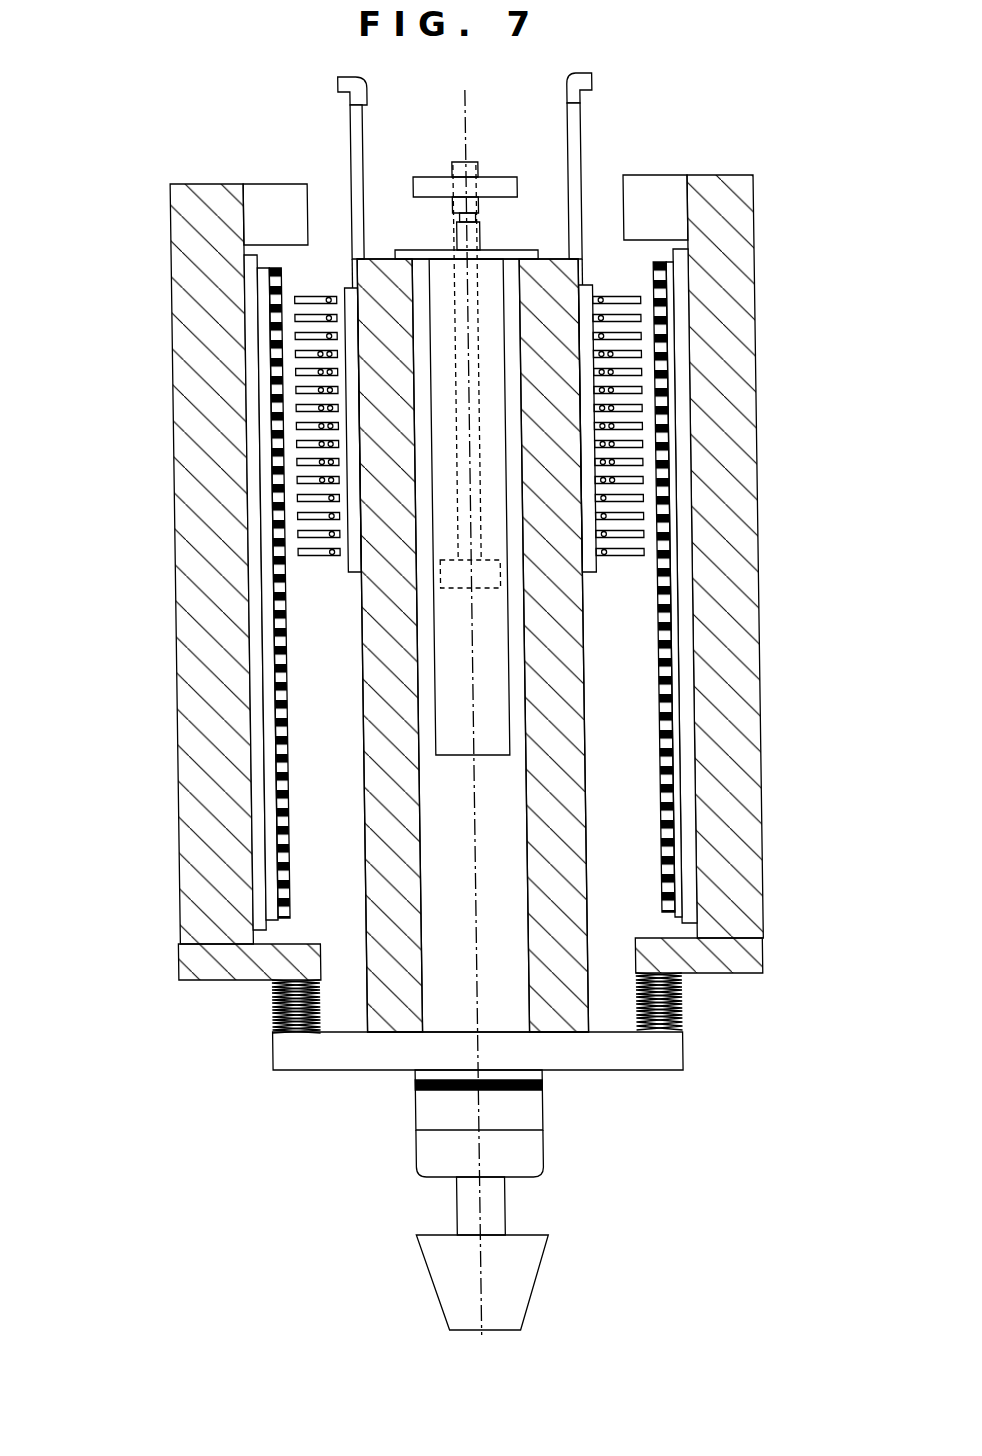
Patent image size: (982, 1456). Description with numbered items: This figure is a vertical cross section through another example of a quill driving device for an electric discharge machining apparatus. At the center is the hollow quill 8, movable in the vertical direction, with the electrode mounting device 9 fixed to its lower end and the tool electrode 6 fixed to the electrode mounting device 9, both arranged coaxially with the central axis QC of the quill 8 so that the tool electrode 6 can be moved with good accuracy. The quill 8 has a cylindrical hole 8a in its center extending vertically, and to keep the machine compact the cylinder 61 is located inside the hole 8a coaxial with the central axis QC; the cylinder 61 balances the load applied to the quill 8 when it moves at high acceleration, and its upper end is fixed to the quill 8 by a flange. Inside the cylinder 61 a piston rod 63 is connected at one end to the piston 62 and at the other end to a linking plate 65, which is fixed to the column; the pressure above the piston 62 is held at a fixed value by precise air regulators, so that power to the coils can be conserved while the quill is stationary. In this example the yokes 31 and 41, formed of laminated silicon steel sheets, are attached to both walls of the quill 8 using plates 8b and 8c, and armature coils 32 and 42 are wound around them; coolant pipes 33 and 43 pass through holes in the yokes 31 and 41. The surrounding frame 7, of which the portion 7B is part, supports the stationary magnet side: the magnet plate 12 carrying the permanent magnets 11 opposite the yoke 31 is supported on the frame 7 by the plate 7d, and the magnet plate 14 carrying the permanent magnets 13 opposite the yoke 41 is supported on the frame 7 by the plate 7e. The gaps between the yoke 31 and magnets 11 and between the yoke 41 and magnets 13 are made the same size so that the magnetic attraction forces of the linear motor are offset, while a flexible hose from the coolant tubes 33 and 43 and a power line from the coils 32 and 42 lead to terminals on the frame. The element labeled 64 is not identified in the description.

The tool electrode 6 is at (440, 1307).
The frame 7 is at (756, 383).
The housing lower body 7B is at (197, 815).
The plate 7d is at (253, 387).
The plate 7e is at (687, 523).
The quill 8 is at (572, 908).
The cylindrical hole 8a is at (527, 912).
The plate 8b is at (354, 568).
The plate 8c is at (587, 568).
The electrode mounting device 9 is at (402, 1135).
The permanent magnets 11 is at (282, 290).
The magnet plate 12 is at (268, 321).
The permanent magnets 13 is at (663, 297).
The magnet plate 14 is at (670, 278).
The yoke 31 is at (308, 579).
The armature coil 32 is at (310, 482).
The coolant pipe 33 is at (357, 123).
The yoke 41 is at (640, 417).
The armature coil 42 is at (625, 458).
The coolant pipe 43 is at (581, 92).
The cylinder 61 is at (510, 657).
The piston 62 is at (482, 587).
The piston rod 63 is at (470, 232).
The top plate 64 is at (520, 250).
The linking plate 65 is at (438, 176).
The central axis QC is at (466, 126).